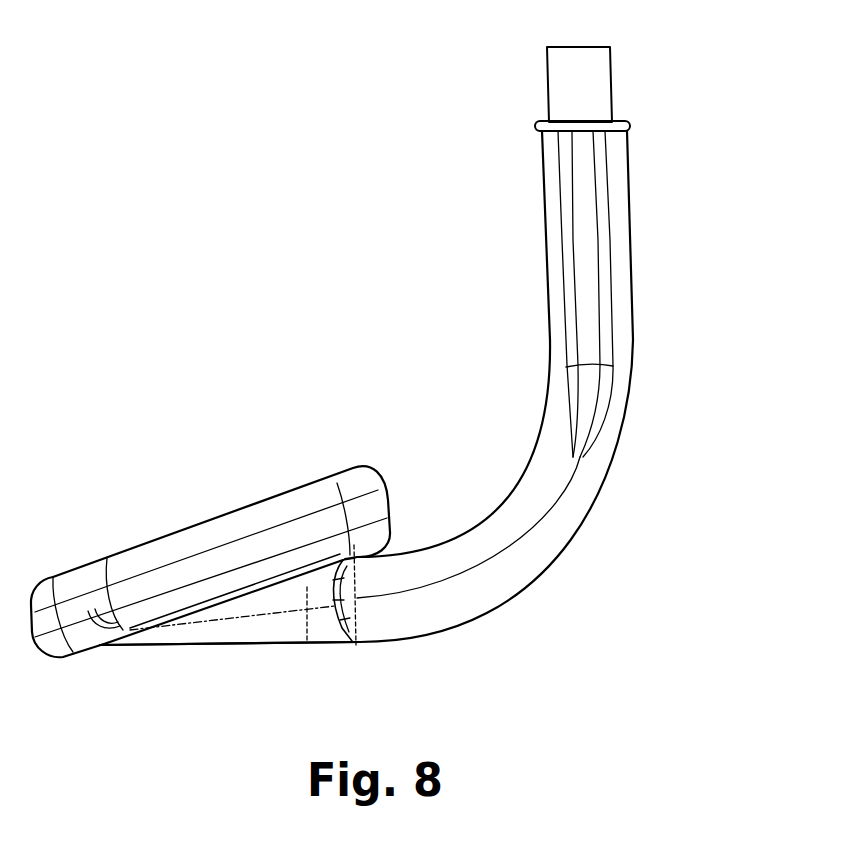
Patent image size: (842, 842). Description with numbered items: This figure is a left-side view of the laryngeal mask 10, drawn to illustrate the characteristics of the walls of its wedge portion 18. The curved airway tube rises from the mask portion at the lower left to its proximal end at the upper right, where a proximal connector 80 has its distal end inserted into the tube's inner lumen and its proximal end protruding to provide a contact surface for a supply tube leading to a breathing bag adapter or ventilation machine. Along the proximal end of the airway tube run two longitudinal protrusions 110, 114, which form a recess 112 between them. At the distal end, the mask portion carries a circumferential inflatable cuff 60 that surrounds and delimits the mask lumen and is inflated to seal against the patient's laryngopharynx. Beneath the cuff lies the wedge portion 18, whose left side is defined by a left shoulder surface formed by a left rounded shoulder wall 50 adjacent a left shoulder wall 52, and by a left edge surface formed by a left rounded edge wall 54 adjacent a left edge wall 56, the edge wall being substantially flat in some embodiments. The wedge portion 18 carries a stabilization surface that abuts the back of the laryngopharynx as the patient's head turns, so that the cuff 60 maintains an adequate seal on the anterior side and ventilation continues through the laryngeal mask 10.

The laryngeal mask 10 is at (160, 267).
The wedge portion 18 is at (135, 660).
The left rounded shoulder wall 50 is at (330, 632).
The left shoulder wall 52 is at (317, 588).
The left rounded edge wall 54 is at (267, 623).
The left edge wall 56 is at (235, 612).
The inflatable cuff 60 is at (289, 500).
The proximal connector 80 is at (546, 48).
The longitudinal protrusion 110 is at (620, 213).
The recess 112 is at (585, 169).
The longitudinal protrusion 114 is at (565, 205).